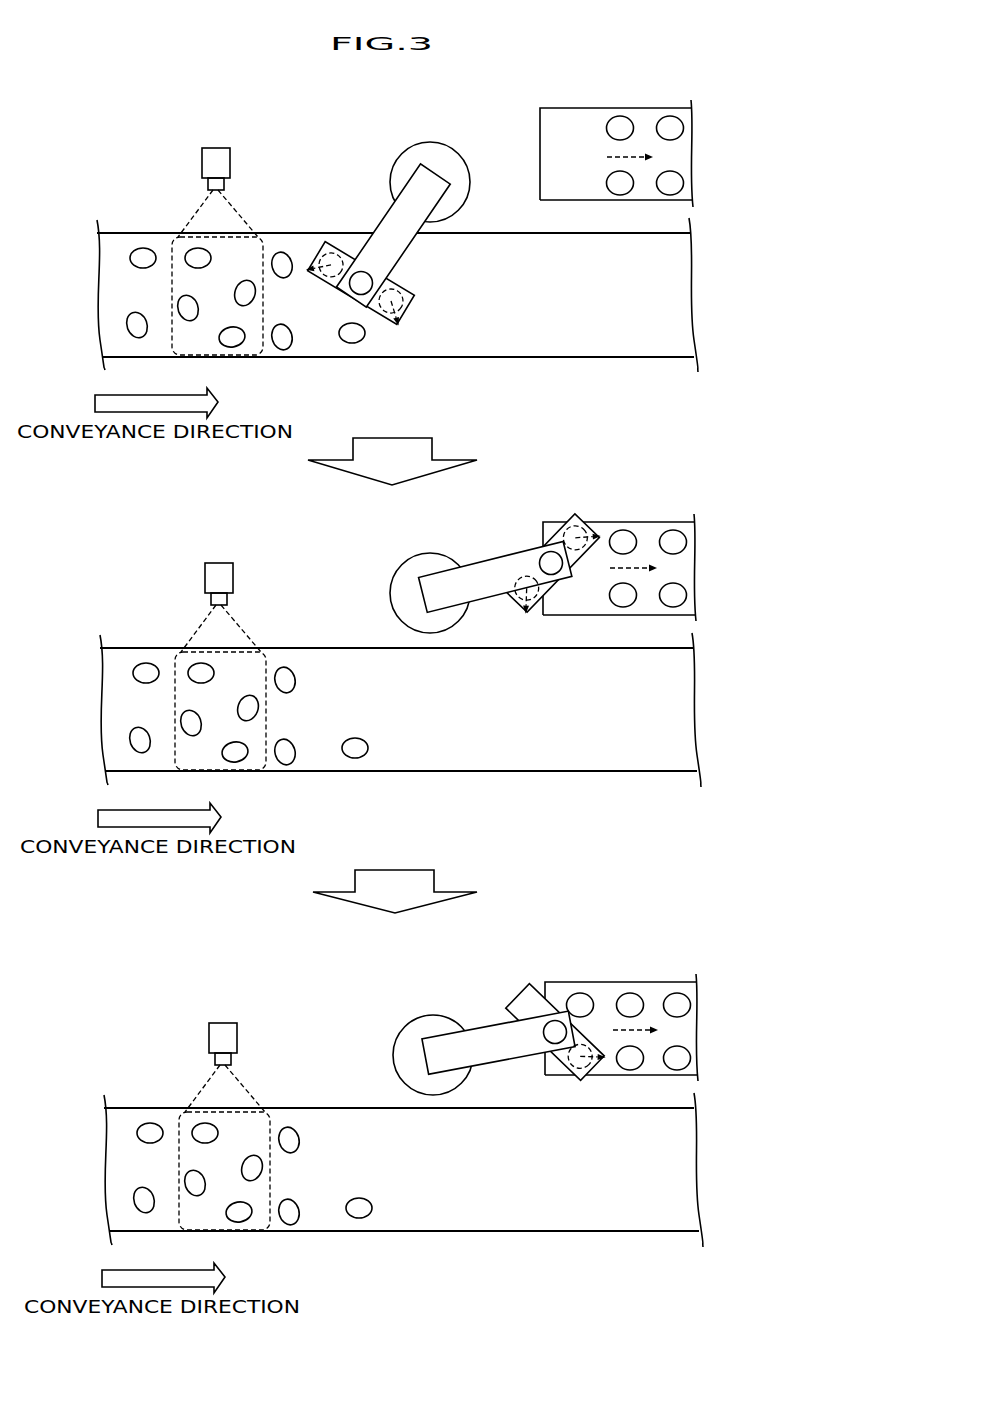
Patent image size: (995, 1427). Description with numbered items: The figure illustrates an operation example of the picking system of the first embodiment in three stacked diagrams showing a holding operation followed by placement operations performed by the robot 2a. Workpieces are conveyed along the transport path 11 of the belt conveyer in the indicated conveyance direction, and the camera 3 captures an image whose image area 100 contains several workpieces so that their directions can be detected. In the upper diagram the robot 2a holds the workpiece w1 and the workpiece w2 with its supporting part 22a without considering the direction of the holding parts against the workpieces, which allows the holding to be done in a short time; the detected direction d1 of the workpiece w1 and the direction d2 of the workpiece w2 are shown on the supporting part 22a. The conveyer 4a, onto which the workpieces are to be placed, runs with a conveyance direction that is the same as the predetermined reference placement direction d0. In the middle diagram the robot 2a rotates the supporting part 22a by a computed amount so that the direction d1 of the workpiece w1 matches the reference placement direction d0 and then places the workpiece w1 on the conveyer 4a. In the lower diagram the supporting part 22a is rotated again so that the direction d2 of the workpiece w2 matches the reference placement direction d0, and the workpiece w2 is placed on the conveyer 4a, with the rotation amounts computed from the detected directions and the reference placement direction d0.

The camera 3 is at (230, 156).
The robot 2a is at (465, 138).
The supporting part 22a is at (390, 322).
The conveyer 4a is at (560, 107).
The transport path 11 is at (638, 358).
The image area 100 is at (233, 357).
The workpiece w1 is at (413, 290).
The workpiece w2 is at (326, 241).
The reference placement direction d0 is at (647, 593).
The direction of the workpiece w1 d1 is at (491, 448).
The direction of the workpiece w2 d2 is at (614, 1122).